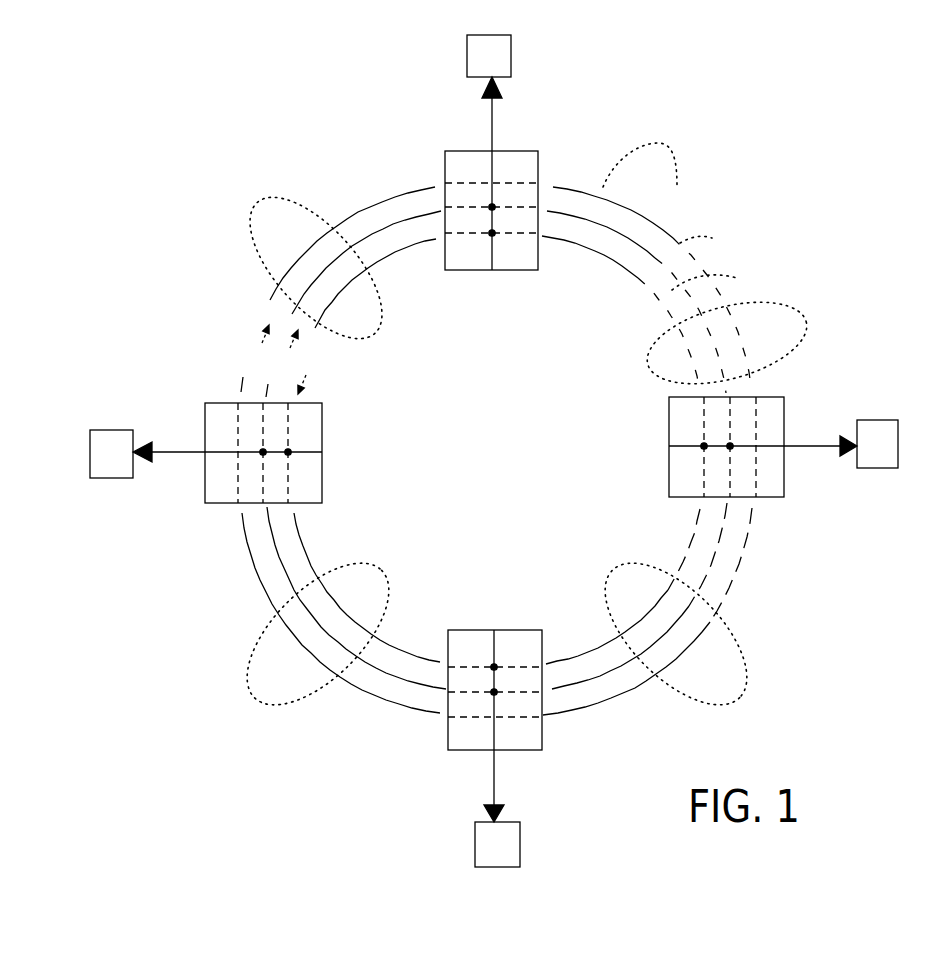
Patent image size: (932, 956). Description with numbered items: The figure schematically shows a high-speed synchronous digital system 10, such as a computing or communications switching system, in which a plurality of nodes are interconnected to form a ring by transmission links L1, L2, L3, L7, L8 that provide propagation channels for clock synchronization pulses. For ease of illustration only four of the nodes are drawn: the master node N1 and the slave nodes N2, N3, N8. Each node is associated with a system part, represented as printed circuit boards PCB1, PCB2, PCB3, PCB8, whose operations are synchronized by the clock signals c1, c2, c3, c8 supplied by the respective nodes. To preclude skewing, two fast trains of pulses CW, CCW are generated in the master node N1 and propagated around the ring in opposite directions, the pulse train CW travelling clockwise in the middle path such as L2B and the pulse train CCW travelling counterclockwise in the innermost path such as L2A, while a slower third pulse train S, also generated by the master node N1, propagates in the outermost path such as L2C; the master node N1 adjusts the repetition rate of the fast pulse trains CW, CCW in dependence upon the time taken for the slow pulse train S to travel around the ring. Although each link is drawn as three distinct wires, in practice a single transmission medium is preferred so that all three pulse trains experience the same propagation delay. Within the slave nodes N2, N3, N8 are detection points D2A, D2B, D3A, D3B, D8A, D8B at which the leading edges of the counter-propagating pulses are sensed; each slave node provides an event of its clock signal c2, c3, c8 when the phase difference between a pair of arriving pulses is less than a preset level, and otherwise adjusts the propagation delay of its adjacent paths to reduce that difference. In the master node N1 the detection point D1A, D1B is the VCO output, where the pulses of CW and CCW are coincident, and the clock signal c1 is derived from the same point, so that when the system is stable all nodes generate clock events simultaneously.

The high-speed synchronous digital system 10 is at (118, 740).
The master node N1 is at (495, 702).
The slave node N2 is at (251, 453).
The slave node N3 is at (491, 200).
The slave node N8 is at (738, 447).
The printed circuit board PCB1 is at (477, 844).
The printed circuit board PCB2 is at (111, 443).
The printed circuit board PCB3 is at (508, 56).
The printed circuit board PCB8 is at (877, 456).
The clock signal c1 is at (501, 726).
The clock signal c2 is at (227, 461).
The clock signal c3 is at (485, 173).
The clock signal c8 is at (763, 443).
The detection point D1A is at (508, 660).
The detection point D1B is at (507, 686).
The detection point D2A is at (303, 446).
The detection point D2B is at (274, 446).
The detection point D3A is at (506, 227).
The detection point D3B is at (505, 202).
The detection point D8A is at (690, 441).
The detection point D8B is at (719, 441).
The transmission link L1 is at (318, 634).
The transmission link L2 is at (315, 268).
The transmission link L3 is at (644, 160).
The transmission link L7 is at (737, 317).
The transmission link L8 is at (676, 634).
The innermost path L2A is at (496, 450).
The middle path L2B is at (496, 449).
The outermost path L2C is at (497, 450).
The slow pulse train S is at (261, 341).
The fast pulse train CW is at (286, 350).
The fast pulse train CCW is at (310, 370).